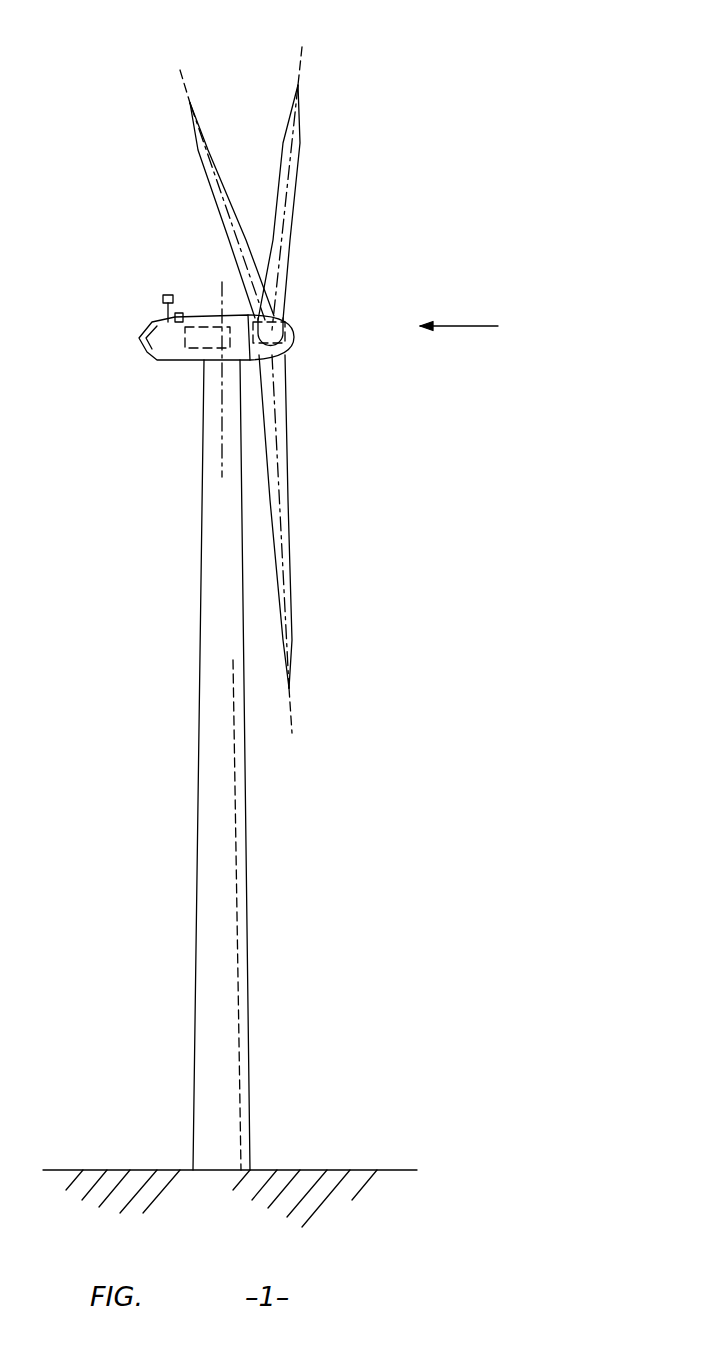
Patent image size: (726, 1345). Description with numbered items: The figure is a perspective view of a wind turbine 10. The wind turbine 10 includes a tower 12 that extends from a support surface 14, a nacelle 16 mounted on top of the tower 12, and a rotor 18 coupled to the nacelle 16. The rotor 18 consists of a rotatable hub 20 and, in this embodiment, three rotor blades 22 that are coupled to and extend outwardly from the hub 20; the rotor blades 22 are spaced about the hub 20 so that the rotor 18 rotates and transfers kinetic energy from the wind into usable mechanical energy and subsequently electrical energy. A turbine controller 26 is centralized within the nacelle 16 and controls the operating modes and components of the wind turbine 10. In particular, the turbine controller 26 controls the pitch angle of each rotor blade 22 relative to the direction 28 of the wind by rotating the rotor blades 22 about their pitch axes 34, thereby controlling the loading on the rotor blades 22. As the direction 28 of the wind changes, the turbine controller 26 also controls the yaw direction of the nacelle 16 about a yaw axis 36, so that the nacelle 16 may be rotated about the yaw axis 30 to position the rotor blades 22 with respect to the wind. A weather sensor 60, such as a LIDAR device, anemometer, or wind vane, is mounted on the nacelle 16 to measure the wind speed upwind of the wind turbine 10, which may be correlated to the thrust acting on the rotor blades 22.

The wind turbine 10 is at (393, 158).
The tower 12 is at (208, 876).
The support surface 14 is at (124, 1170).
The nacelle 16 is at (178, 363).
The rotor 18 is at (302, 315).
The rotatable hub 20 is at (300, 343).
The rotor blade 22 is at (230, 192).
The turbine controller 26 is at (200, 313).
The direction of the wind 28 is at (472, 326).
The yaw axis 30 is at (295, 328).
The pitch axis 34 is at (182, 87).
The yaw axis 36 is at (223, 420).
The weather sensor 60 is at (163, 300).